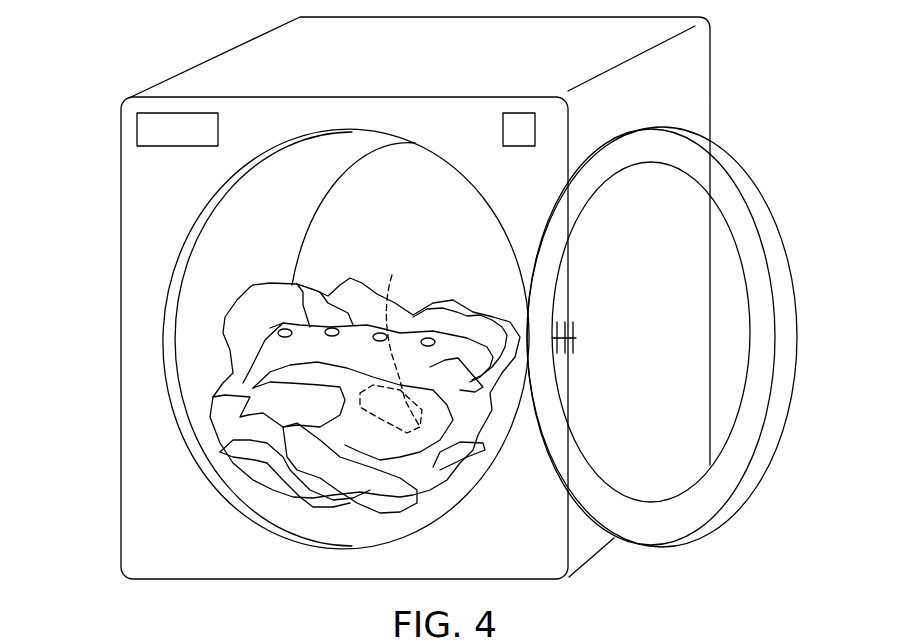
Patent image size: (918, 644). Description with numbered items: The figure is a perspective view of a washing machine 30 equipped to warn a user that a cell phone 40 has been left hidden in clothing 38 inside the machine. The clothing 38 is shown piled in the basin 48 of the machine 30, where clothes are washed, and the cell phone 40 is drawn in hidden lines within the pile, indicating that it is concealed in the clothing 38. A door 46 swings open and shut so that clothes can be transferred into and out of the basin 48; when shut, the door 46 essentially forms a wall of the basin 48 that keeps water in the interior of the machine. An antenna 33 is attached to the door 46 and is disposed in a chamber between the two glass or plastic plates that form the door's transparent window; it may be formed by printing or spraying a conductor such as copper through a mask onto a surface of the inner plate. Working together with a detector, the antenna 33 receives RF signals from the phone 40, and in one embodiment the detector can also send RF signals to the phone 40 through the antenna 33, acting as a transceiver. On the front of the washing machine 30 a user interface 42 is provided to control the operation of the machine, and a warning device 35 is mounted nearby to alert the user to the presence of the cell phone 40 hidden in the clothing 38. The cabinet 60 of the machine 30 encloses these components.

The washing machine 30 is at (108, 63).
The antenna 33 is at (576, 337).
The warning device 35 is at (503, 127).
The clothing 38 is at (213, 396).
The cell phone 40 is at (391, 341).
The user interface 42 is at (137, 122).
The door 46 is at (758, 190).
The basin 48 is at (280, 208).
The cabinet 60 is at (694, 78).